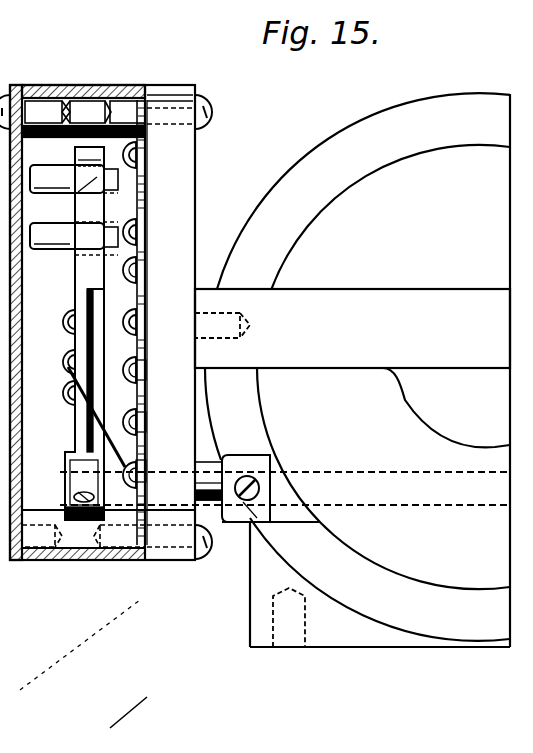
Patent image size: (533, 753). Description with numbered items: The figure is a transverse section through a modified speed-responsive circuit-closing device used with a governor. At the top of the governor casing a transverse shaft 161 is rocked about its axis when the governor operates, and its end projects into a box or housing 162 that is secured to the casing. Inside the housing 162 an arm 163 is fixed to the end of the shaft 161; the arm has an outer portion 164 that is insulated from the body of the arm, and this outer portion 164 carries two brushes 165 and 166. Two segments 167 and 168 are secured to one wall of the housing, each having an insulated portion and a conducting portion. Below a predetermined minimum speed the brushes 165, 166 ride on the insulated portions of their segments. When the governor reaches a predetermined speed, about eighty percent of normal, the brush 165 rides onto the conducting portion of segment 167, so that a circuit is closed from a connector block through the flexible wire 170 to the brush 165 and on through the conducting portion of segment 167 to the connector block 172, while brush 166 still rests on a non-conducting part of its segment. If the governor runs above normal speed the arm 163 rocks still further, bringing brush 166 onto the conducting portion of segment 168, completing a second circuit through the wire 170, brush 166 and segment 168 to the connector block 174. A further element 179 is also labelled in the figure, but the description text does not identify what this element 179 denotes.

The transverse shaft 161 is at (213, 506).
The box or housing 162 is at (100, 561).
The arm 163 is at (75, 462).
The outer portion of the arm 164 is at (80, 272).
The brush 165 is at (56, 252).
The brush 166 is at (72, 193).
The segment 167 is at (141, 270).
The segment 168 is at (141, 206).
The flexible wire 170 is at (87, 404).
The connector block 172 is at (141, 424).
The connector block 174 is at (141, 378).
The roller 179 is at (141, 467).